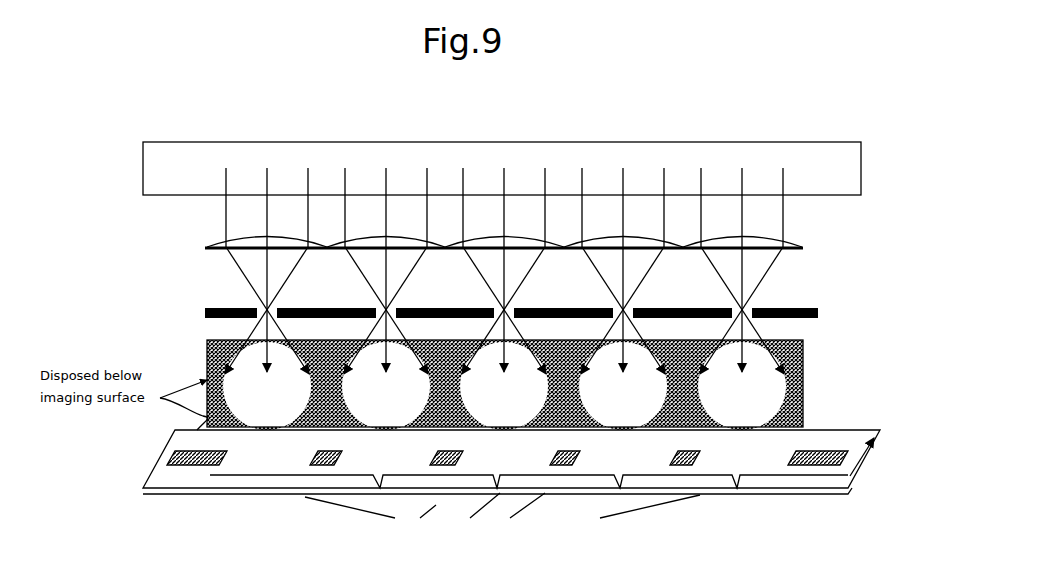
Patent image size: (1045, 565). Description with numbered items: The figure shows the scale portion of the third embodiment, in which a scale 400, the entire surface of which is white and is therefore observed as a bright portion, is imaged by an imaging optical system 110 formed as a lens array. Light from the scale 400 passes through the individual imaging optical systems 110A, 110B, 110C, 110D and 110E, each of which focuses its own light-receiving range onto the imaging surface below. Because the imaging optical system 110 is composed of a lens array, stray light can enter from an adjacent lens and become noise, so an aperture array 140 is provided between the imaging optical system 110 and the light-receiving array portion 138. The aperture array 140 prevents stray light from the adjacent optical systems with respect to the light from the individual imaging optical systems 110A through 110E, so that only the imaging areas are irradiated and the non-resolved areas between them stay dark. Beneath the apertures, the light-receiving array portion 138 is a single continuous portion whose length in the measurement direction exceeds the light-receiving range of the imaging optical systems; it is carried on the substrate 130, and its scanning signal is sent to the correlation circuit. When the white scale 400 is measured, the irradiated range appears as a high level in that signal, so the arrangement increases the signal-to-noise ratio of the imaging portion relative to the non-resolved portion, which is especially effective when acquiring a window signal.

The scale 400 is at (143, 178).
The imaging optical system 110 is at (475, 262).
The imaging optical system 110A is at (217, 252).
The imaging optical system 110B is at (338, 252).
The imaging optical system 110C is at (457, 252).
The imaging optical system 110D is at (576, 252).
The imaging optical system 110E is at (695, 252).
The aperture array 140 is at (205, 313).
The substrate 130 is at (143, 488).
The light-receiving array portion 138 is at (212, 465).